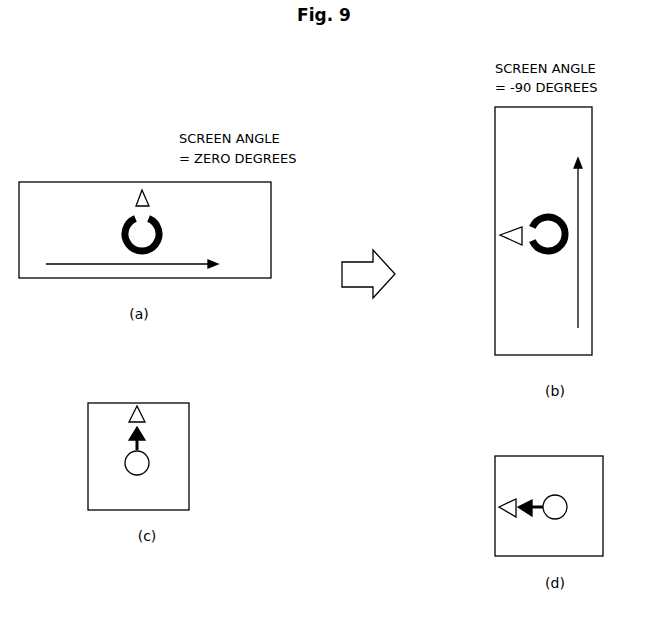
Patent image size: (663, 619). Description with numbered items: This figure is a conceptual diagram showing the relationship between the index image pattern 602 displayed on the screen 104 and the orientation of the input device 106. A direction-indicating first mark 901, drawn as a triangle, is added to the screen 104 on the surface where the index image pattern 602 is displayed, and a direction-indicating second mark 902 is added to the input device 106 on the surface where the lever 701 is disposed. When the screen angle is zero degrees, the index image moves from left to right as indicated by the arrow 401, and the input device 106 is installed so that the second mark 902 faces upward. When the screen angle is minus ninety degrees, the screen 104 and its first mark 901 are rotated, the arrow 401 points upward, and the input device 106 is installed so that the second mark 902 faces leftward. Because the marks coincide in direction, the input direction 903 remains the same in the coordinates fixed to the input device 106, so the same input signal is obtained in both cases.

The screen 104 is at (93, 185).
The arrow 401 is at (55, 263).
The index image pattern 602 is at (160, 242).
The first mark 901 is at (142, 183).
The input device 106 is at (90, 411).
The second mark 902 is at (147, 418).
The input direction 903 is at (139, 447).
The lever 701 is at (142, 467).